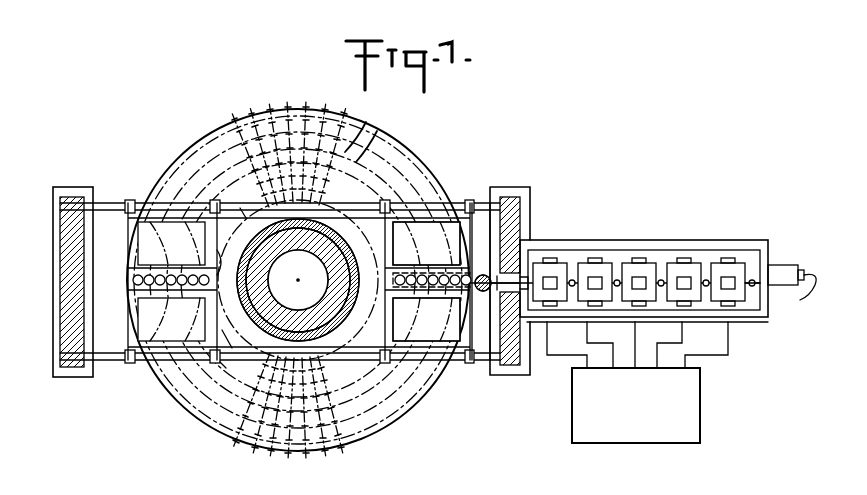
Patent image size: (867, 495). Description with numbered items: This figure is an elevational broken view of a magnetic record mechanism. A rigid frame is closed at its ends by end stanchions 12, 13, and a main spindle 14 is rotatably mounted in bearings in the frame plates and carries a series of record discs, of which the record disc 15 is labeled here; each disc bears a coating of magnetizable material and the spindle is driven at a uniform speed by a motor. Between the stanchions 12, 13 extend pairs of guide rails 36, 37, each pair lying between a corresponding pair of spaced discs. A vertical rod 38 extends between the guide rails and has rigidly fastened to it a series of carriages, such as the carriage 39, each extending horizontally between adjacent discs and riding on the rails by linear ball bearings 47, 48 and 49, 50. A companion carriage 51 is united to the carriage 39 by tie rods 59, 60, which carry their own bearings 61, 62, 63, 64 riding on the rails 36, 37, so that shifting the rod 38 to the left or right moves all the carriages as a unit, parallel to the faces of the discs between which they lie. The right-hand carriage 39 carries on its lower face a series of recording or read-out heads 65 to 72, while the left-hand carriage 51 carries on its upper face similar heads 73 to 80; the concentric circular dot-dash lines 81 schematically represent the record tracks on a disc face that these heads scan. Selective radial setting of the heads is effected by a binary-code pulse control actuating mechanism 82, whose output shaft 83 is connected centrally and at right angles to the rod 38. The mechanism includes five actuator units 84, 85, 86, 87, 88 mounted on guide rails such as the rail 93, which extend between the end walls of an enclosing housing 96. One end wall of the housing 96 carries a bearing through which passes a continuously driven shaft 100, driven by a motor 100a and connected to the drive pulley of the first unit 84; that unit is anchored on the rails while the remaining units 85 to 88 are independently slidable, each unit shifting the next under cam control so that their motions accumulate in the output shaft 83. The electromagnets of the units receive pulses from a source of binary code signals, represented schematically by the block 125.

The end stanchion 12 is at (512, 215).
The end stanchion 13 is at (56, 280).
The main spindle 14 is at (282, 290).
The record disc 15 is at (202, 143).
The guide rail 36 is at (110, 352).
The guide rail 37 is at (110, 210).
The rod 38 is at (484, 274).
The carriage 39 is at (418, 204).
The linear ball bearing 47 is at (384, 199).
The linear ball bearing 48 is at (468, 199).
The linear ball bearing 49 is at (376, 364).
The linear ball bearing 50 is at (466, 364).
The carriage 51 is at (140, 216).
The tie rod 59 is at (245, 210).
The tie rod 60 is at (230, 345).
The bearing 61 is at (128, 199).
The bearing 62 is at (218, 199).
The bearing 63 is at (126, 364).
The bearing 64 is at (222, 364).
The recording or read-out head 65 is at (426, 243).
The recording or read-out head 72 is at (426, 319).
The recording or read-out head 73 is at (132, 280).
The recording or read-out head 80 is at (218, 272).
The concentric circular dot-dash lines 81 is at (362, 128).
The binary-code pulse control actuating mechanism 82 is at (604, 240).
The output shaft 83 is at (496, 288).
The actuator unit 84 is at (718, 262).
The actuator unit 85 is at (670, 262).
The actuator unit 86 is at (630, 262).
The actuator unit 87 is at (582, 262).
The actuator unit 88 is at (540, 262).
The guide rail 93 is at (740, 280).
The enclosing housing 96 is at (760, 318).
The continuously driven shaft 100 is at (800, 292).
The motor 100a is at (783, 265).
The source of binary code signals 125 is at (665, 446).